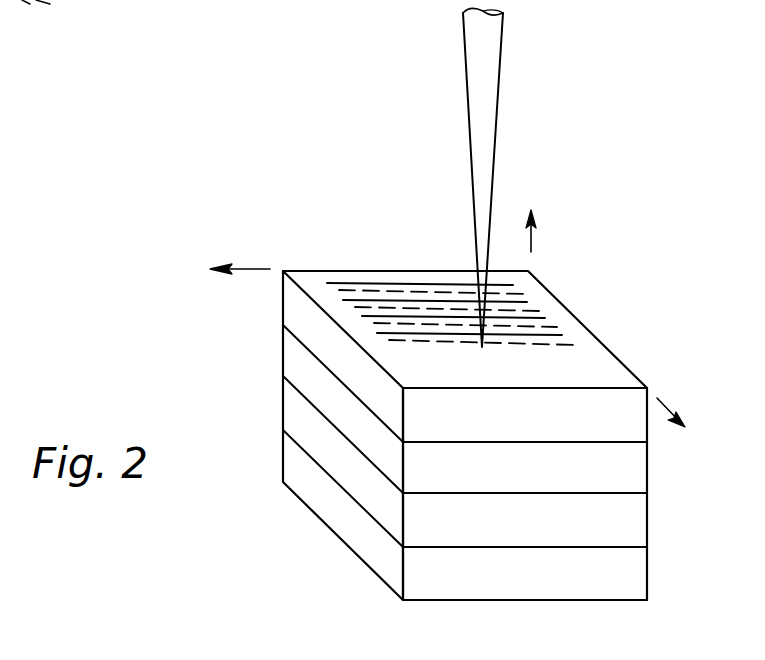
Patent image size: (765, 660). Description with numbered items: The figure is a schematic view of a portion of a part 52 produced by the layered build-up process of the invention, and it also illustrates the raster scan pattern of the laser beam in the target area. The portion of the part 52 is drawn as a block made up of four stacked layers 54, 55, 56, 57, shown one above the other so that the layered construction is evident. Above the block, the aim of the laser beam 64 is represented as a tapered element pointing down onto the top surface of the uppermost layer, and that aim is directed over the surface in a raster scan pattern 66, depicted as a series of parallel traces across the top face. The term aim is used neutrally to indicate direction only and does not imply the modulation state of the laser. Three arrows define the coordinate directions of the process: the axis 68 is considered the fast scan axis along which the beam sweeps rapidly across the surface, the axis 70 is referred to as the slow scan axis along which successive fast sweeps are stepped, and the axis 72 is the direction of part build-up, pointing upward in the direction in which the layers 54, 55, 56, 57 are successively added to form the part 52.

The part 52 is at (463, 435).
The layer 54 is at (522, 582).
The layer 55 is at (522, 529).
The layer 56 is at (522, 476).
The layer 57 is at (522, 422).
The aim of the laser beam 64 is at (489, 57).
The raster scan pattern 66 is at (390, 292).
The fast scan axis 68 is at (258, 268).
The slow scan axis 70 is at (670, 396).
The direction of part build-up 72 is at (532, 238).